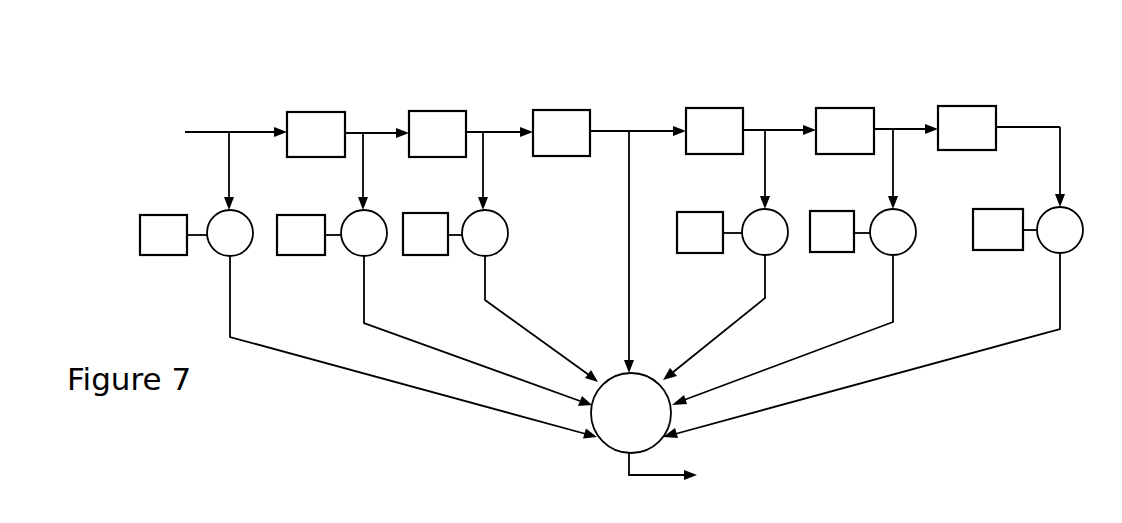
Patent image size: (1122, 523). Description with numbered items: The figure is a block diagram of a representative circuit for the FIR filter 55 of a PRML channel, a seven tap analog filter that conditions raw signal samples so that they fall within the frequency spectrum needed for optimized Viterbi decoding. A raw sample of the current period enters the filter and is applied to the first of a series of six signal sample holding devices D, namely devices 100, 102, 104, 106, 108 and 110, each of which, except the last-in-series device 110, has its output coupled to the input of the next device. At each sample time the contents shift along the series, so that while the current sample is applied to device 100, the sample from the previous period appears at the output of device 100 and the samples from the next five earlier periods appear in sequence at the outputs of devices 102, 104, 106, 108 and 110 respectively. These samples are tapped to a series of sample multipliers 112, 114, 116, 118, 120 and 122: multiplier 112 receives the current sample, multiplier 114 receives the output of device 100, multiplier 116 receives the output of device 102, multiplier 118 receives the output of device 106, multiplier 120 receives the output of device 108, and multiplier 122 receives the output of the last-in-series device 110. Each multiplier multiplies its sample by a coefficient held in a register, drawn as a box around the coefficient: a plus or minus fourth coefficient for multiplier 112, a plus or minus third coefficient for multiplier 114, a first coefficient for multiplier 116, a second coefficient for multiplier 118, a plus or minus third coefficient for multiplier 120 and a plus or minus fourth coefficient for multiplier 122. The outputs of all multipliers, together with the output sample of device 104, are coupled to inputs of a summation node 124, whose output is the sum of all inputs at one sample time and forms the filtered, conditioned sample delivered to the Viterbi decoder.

The FIR filter 55 is at (553, 50).
The signal sample holding device 100 is at (302, 112).
The signal sample holding device 102 is at (430, 111).
The signal sample holding device 104 is at (563, 110).
The signal sample holding device 106 is at (714, 108).
The signal sample holding device 108 is at (846, 108).
The signal sample holding device 110 is at (973, 106).
The sample multiplier 112 is at (240, 254).
The sample multiplier 114 is at (376, 254).
The sample multiplier 116 is at (497, 254).
The sample multiplier 118 is at (777, 248).
The sample multiplier 120 is at (906, 248).
The sample multiplier 122 is at (1074, 246).
The summation node 124 is at (609, 444).